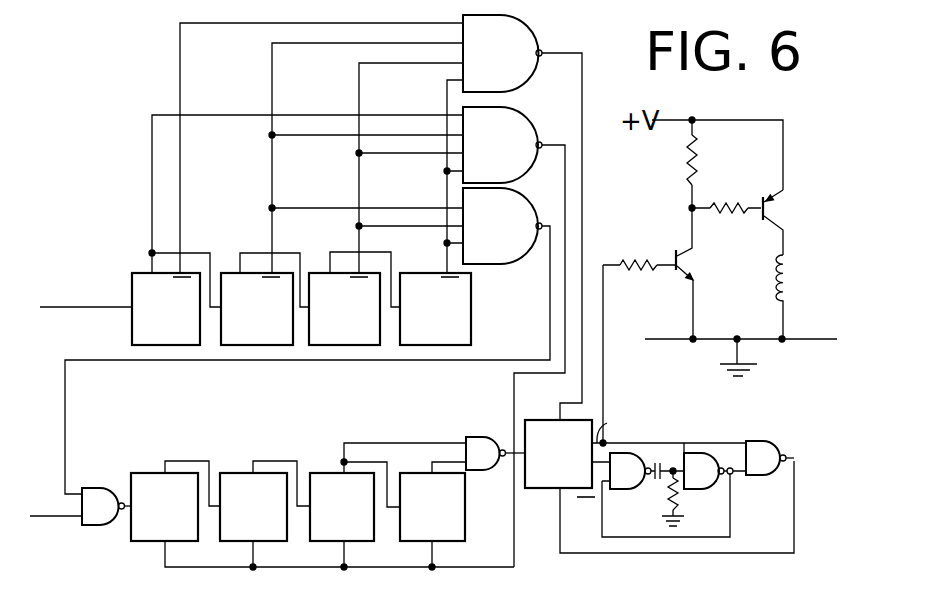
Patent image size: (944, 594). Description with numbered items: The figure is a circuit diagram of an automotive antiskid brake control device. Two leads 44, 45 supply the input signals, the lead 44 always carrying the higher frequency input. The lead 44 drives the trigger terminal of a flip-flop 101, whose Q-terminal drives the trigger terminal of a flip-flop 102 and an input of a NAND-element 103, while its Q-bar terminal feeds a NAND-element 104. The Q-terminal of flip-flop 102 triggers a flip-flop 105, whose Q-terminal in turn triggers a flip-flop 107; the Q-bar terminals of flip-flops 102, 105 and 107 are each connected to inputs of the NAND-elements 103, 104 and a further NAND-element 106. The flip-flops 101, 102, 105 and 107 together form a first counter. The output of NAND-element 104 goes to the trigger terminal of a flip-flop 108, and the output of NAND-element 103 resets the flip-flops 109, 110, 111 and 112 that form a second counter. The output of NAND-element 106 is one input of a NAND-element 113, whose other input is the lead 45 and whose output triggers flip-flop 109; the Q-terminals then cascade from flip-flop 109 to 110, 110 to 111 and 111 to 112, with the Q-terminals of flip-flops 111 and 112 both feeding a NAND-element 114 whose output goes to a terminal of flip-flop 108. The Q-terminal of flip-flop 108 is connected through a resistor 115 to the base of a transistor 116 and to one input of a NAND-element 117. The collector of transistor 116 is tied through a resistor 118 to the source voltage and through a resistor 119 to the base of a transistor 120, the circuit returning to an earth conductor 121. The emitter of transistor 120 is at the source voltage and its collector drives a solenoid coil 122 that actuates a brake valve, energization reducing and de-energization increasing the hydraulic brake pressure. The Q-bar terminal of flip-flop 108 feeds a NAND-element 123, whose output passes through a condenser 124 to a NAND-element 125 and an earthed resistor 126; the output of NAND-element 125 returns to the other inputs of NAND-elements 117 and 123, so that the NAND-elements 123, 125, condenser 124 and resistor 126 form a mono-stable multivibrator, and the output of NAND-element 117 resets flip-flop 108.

The lead 44 is at (77, 307).
The lead 45 is at (50, 516).
The flip-flop 101 is at (142, 278).
The flip-flop 102 is at (253, 345).
The NAND-element 103 is at (517, 164).
The NAND-element 104 is at (517, 72).
The flip-flop 105 is at (347, 345).
The NAND-element 106 is at (517, 244).
The flip-flop 107 is at (432, 345).
The flip-flop 108 is at (545, 488).
The flip-flop 109 is at (148, 541).
The flip-flop 110 is at (256, 440).
The flip-flop 111 is at (327, 472).
The flip-flop 112 is at (420, 472).
The NAND-element 113 is at (101, 490).
The NAND-element 114 is at (480, 438).
The resistor 115 is at (645, 266).
The transistor 116 is at (677, 257).
The NAND-element 117 is at (770, 447).
The resistor 118 is at (698, 149).
The resistor 119 is at (752, 217).
The transistor 120 is at (777, 208).
The earth conductor 121 is at (662, 340).
The solenoid coil 122 is at (777, 275).
The NAND-element 123 is at (636, 453).
The condenser 124 is at (657, 482).
The NAND-element 125 is at (694, 453).
The resistor 126 is at (677, 500).